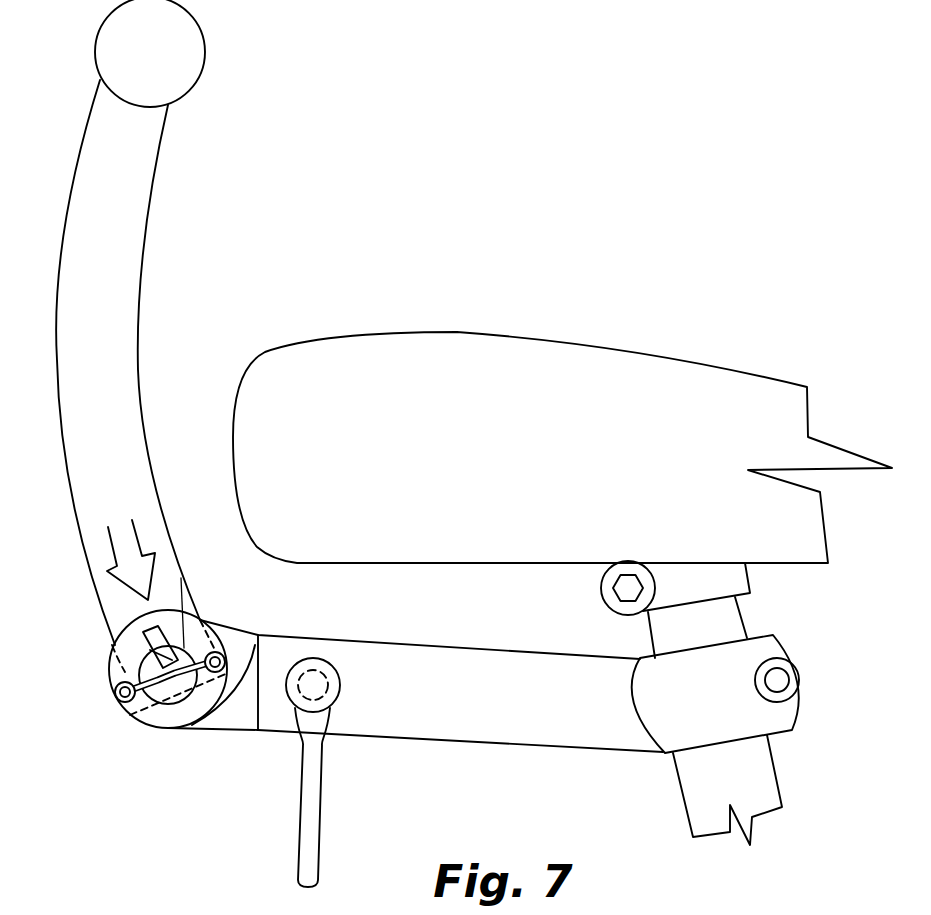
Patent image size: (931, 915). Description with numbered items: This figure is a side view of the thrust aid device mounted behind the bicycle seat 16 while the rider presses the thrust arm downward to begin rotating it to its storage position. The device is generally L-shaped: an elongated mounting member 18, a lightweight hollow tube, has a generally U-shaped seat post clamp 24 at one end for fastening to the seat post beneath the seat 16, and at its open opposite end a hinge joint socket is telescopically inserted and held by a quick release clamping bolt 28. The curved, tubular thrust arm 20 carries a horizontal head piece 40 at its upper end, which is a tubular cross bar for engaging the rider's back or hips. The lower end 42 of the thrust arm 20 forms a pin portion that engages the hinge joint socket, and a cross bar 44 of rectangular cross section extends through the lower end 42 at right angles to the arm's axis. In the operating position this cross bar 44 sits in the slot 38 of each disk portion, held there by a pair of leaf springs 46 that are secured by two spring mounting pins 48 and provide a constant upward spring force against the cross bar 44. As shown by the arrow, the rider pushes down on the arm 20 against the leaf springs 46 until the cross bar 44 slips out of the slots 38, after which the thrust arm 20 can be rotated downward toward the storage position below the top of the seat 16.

The bicycle seat 16 is at (633, 355).
The mounting member 18 is at (455, 742).
The thrust arm 20 is at (137, 327).
The seat post clamp 24 is at (782, 638).
The quick release clamping bolt 28 is at (308, 795).
The slot 38 is at (145, 617).
The head piece 40 is at (188, 88).
The lower end 42 is at (200, 613).
The cross bar 44 is at (258, 660).
The leaf springs 46 is at (181, 580).
The spring mounting pins 48 is at (130, 707).